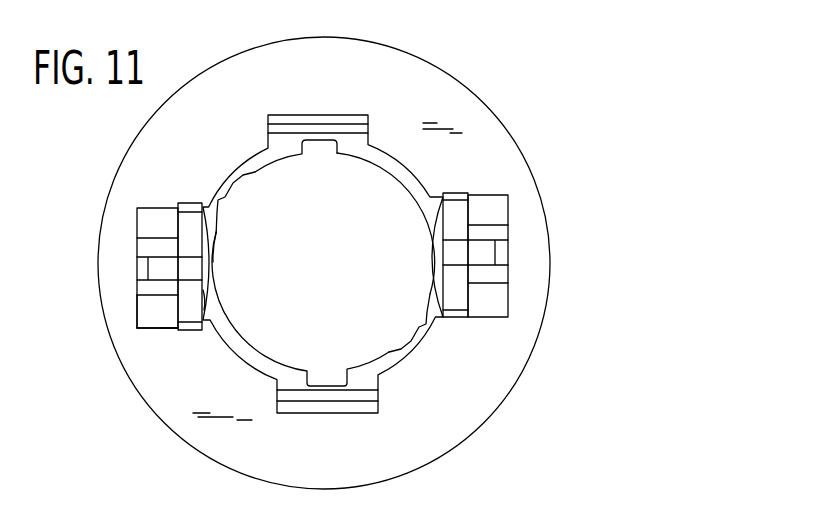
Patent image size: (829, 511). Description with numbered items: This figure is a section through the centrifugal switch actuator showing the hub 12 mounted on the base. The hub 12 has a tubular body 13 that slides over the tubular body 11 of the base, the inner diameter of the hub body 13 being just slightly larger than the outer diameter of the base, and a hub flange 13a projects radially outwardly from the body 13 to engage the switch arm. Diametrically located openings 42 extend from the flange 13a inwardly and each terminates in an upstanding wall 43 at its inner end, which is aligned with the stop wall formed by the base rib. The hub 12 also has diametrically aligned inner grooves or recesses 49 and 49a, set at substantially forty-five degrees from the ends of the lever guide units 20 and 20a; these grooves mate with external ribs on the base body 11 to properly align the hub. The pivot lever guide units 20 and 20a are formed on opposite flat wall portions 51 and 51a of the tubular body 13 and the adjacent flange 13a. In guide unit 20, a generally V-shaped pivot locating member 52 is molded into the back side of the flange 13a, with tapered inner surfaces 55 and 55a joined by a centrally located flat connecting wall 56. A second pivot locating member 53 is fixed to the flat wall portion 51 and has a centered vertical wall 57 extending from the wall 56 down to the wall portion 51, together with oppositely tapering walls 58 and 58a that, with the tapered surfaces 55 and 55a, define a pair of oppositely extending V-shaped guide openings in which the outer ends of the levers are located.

The tubular body 11 is at (324, 263).
The hub 12 is at (176, 448).
The tubular body 13 is at (323, 226).
The hub flange 13a is at (277, 88).
The lever guide unit 20 is at (190, 342).
The lever guide unit 20a is at (497, 322).
The opening 42 is at (356, 104).
The upstanding wall 43 is at (317, 104).
The inner groove 49 is at (237, 192).
The inner groove 49a is at (416, 332).
The flat wall portion 51 is at (167, 265).
The flat wall portion 51a is at (475, 271).
The pivot locating member 52 is at (177, 261).
The pivot locating member 53 is at (160, 330).
The tapered inner surface 55 is at (215, 240).
The tapered inner surface 55a is at (203, 297).
The flat connecting wall 56 is at (158, 269).
The vertical wall 57 is at (139, 308).
The tapering wall 58 is at (119, 302).
The tapering wall 58a is at (143, 317).